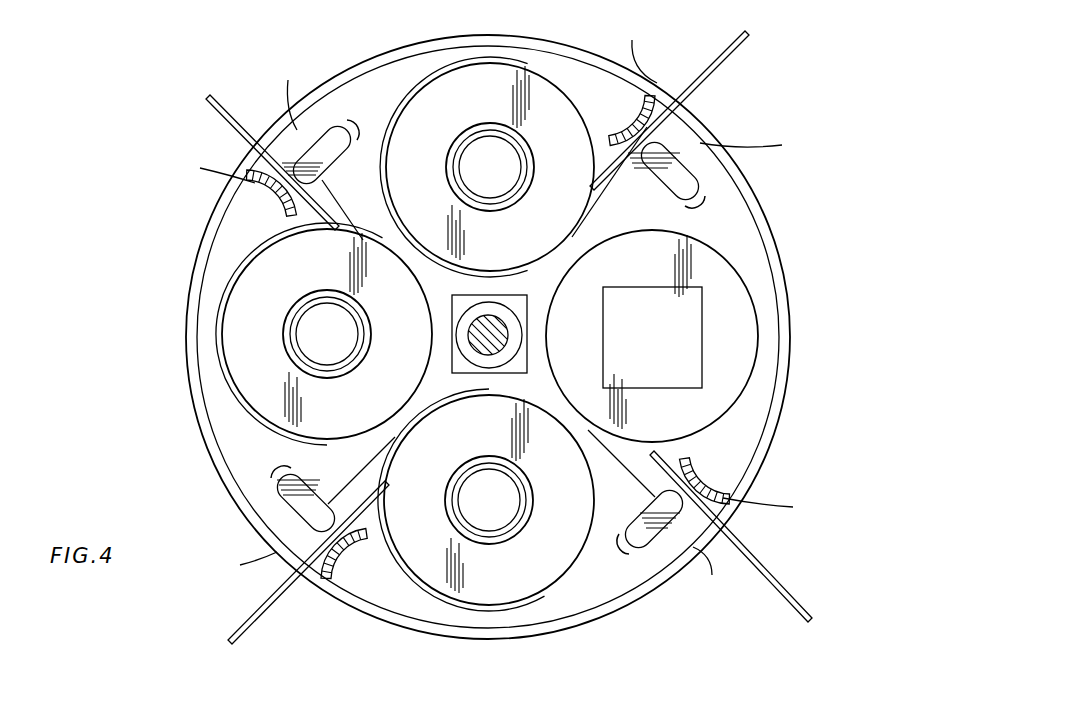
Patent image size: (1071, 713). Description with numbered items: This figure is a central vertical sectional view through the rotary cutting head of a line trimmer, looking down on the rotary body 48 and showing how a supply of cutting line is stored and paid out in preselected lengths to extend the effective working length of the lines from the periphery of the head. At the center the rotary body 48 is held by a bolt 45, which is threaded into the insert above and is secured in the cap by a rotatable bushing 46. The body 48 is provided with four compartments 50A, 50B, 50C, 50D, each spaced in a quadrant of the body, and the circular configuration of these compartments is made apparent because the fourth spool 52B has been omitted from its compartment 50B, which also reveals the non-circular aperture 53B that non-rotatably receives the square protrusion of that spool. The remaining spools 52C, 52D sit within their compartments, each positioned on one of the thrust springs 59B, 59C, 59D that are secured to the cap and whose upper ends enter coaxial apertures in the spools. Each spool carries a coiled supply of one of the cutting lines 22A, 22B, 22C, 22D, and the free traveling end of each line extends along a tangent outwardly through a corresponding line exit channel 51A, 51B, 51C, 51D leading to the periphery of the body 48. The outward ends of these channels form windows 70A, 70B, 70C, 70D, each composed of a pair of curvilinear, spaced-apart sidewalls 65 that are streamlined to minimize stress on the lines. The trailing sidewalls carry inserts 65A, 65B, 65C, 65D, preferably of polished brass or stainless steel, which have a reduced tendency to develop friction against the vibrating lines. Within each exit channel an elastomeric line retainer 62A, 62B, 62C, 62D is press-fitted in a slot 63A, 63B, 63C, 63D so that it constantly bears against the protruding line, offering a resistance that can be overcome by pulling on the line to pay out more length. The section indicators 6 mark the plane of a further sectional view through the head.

The section line indicator 6 is at (229, 504).
The cutting line 22A is at (793, 600).
The cutting line 22B is at (748, 40).
The cutting line 22C is at (207, 99).
The cutting line 22D is at (232, 640).
The bolt 45 is at (503, 333).
The rotatable bushing 46 is at (493, 307).
The rotary body 48 is at (787, 400).
The compartment 50A is at (737, 277).
The compartment 50B is at (508, 67).
The compartment 50C is at (222, 332).
The compartment 50D is at (587, 597).
The line exit channel 51A is at (638, 455).
The line exit channel 51B is at (617, 192).
The line exit channel 51C is at (362, 198).
The line exit channel 51D is at (363, 437).
The spool 52B is at (463, 67).
The spool 52C is at (232, 383).
The spool 52D is at (442, 595).
The aperture 53B is at (700, 353).
The thrust spring 59B is at (523, 190).
The thrust spring 59C is at (360, 353).
The thrust spring 59D is at (522, 480).
The elastomeric line retainer 62A is at (653, 540).
The elastomeric line retainer 62B is at (680, 178).
The elastomeric line retainer 62C is at (350, 133).
The elastomeric line retainer 62D is at (313, 497).
The slot 63A is at (643, 547).
The slot 63B is at (693, 187).
The slot 63C is at (330, 125).
The slot 63D is at (300, 470).
The sidewall 65 is at (496, 308).
The insert 65A is at (702, 480).
The insert 65B is at (637, 123).
The insert 65C is at (270, 185).
The insert 65D is at (348, 543).
The window 70A is at (809, 545).
The window 70B is at (731, 104).
The window 70C is at (249, 69).
The window 70D is at (306, 606).